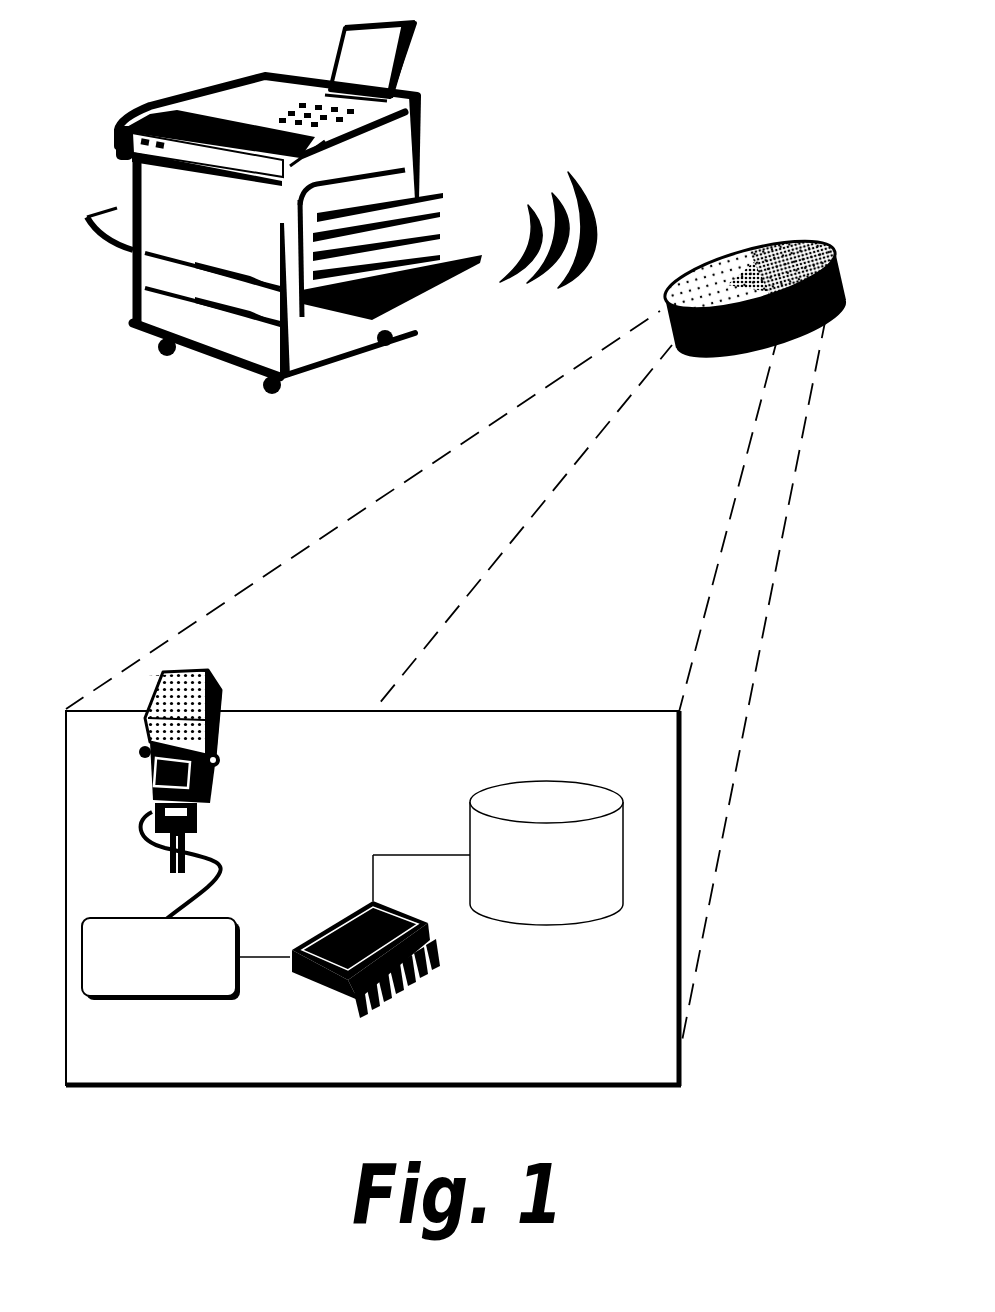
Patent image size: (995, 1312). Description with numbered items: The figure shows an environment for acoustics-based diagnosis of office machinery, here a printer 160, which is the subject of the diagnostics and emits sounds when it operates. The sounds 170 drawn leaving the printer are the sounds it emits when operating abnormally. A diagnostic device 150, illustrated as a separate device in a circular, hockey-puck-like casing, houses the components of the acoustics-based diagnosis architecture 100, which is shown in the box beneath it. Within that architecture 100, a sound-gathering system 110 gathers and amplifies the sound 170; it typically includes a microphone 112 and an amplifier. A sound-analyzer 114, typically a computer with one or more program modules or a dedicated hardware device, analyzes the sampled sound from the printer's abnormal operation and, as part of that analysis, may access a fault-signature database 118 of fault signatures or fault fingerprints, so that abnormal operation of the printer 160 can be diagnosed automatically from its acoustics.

The acoustics-based diagnosis architecture 100 is at (636, 1051).
The sound-gathering system 110 is at (162, 998).
The microphone 112 is at (216, 674).
The sound-analyzer 114 is at (385, 972).
The fault-signature database 118 is at (548, 783).
The diagnostic device 150 is at (769, 299).
The printer 160 is at (422, 102).
The sounds 170 is at (592, 163).